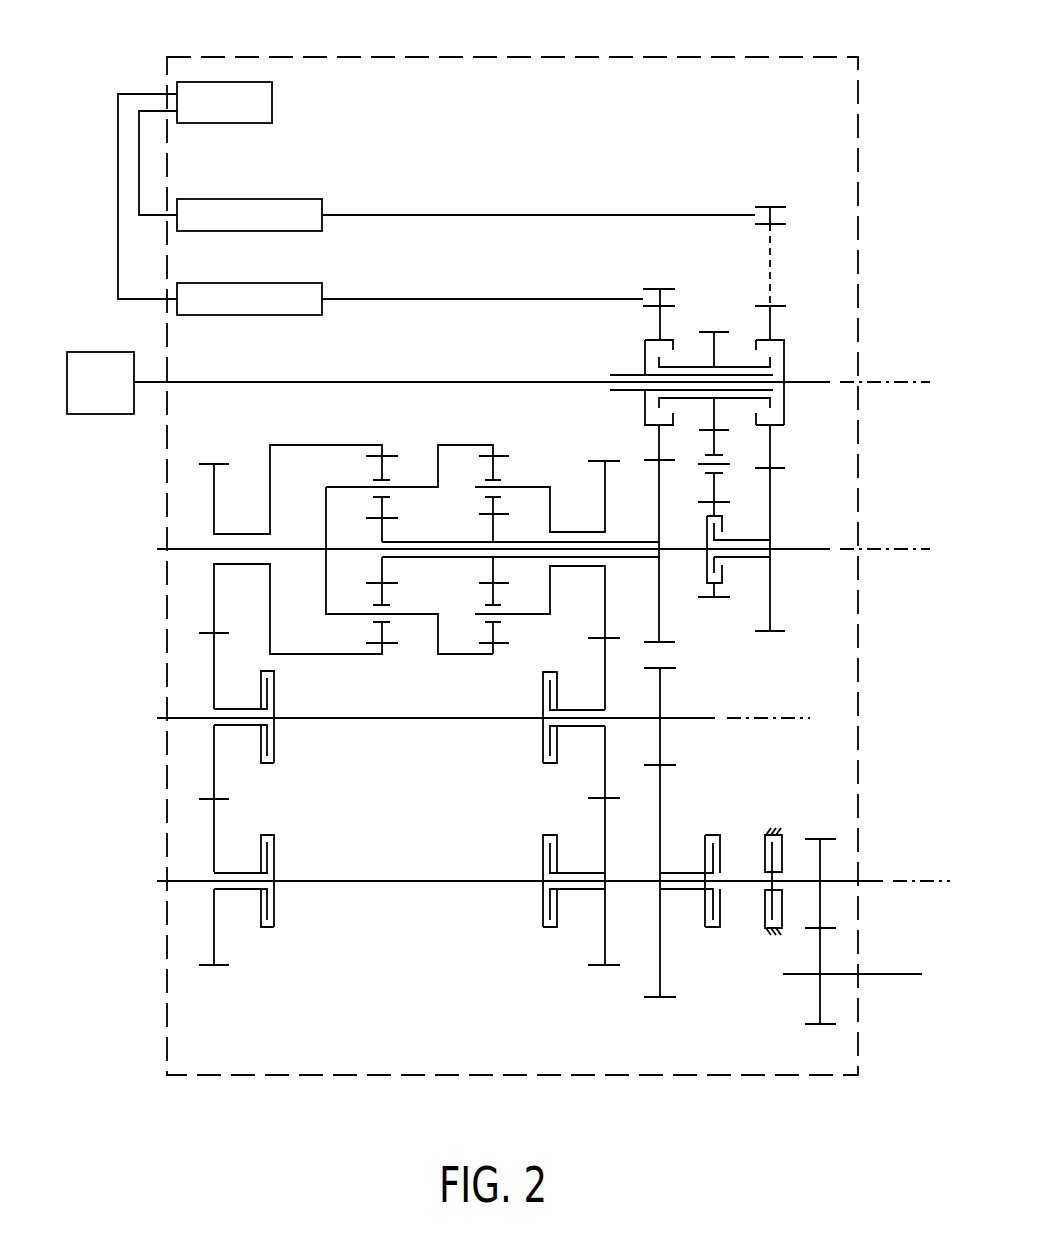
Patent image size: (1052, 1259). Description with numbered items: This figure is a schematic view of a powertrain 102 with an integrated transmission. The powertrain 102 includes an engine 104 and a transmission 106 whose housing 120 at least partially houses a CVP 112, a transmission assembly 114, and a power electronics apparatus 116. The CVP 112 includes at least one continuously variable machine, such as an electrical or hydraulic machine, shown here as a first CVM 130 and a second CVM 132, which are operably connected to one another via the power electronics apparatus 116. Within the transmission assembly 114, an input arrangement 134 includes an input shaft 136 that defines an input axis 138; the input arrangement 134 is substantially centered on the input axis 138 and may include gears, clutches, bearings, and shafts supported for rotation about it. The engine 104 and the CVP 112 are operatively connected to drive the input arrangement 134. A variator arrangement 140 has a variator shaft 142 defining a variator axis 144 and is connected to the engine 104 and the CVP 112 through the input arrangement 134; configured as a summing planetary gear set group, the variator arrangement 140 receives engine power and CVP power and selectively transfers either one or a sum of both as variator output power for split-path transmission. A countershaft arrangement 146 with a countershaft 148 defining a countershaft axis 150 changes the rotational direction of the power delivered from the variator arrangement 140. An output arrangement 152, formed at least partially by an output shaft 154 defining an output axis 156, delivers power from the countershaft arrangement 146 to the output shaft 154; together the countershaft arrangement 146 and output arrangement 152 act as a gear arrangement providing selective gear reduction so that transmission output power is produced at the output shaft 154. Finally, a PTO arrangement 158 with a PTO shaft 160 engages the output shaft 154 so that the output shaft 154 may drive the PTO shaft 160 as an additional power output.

The powertrain 102 is at (73, 128).
The engine 104 is at (101, 351).
The transmission 106 is at (350, 46).
The CVP 112 is at (245, 170).
The transmission assembly 114 is at (128, 775).
The power electronics apparatus 116 is at (195, 190).
The housing 120 is at (685, 55).
The first CVM 130 is at (284, 200).
The second CVM 132 is at (283, 284).
The input arrangement 134 is at (824, 270).
The input shaft 136 is at (305, 380).
The input axis 138 is at (883, 382).
The variator arrangement 140 is at (407, 438).
The variator shaft 142 is at (185, 548).
The variator axis 144 is at (921, 548).
The countershaft arrangement 146 is at (202, 682).
The countershaft 148 is at (440, 722).
The countershaft axis 150 is at (770, 718).
The output arrangement 152 is at (538, 932).
The output shaft 154 is at (445, 882).
The output axis 156 is at (925, 881).
The PTO arrangement 158 is at (790, 1006).
The PTO shaft 160 is at (890, 974).